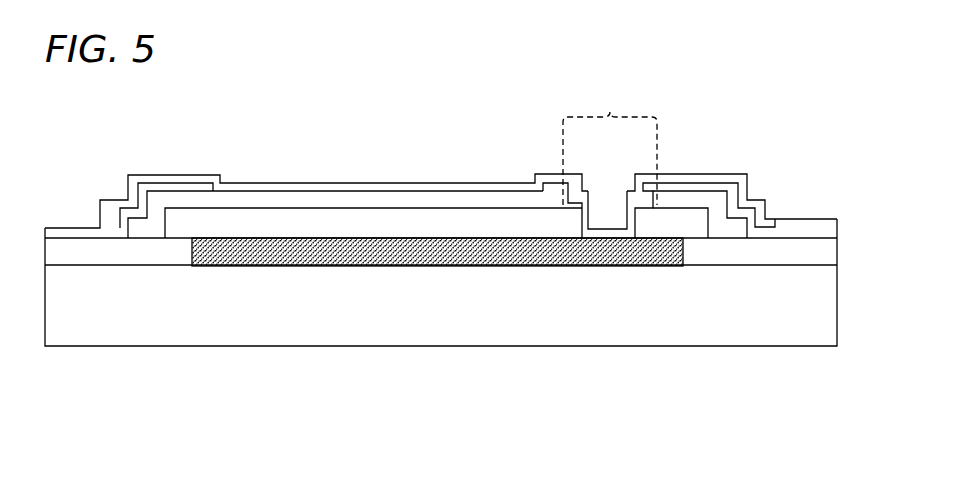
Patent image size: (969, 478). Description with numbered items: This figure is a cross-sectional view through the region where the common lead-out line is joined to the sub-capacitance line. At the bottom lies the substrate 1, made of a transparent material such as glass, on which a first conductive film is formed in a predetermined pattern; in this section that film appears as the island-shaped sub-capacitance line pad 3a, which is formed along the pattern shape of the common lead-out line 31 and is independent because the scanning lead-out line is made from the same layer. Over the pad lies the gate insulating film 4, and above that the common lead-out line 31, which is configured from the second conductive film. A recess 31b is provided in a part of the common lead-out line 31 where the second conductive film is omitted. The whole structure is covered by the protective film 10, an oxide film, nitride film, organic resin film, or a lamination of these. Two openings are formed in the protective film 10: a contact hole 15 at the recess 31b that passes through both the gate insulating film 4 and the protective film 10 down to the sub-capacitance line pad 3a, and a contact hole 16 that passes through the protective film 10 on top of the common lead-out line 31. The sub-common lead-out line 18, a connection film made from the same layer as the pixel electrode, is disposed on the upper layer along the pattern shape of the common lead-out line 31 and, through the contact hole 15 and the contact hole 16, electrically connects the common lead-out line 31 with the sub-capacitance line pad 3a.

The substrate 1 is at (580, 315).
The sub-capacitance line pad 3a is at (415, 252).
The gate insulating film 4 is at (733, 255).
The protective film 10 is at (167, 188).
The contact hole 15 is at (602, 210).
The contact hole 16 is at (377, 181).
The sub-common lead-out line 18 is at (302, 188).
The common lead-out line 31 is at (442, 202).
The recess 31b is at (610, 137).